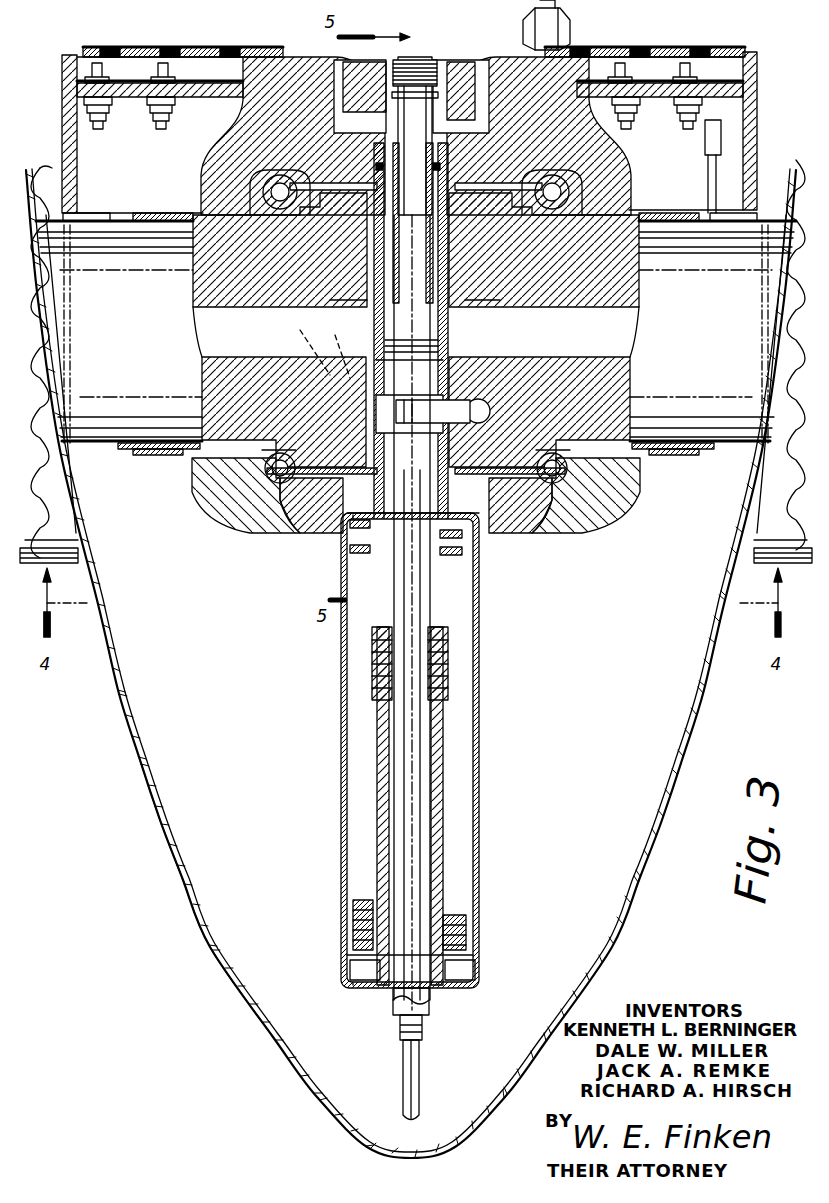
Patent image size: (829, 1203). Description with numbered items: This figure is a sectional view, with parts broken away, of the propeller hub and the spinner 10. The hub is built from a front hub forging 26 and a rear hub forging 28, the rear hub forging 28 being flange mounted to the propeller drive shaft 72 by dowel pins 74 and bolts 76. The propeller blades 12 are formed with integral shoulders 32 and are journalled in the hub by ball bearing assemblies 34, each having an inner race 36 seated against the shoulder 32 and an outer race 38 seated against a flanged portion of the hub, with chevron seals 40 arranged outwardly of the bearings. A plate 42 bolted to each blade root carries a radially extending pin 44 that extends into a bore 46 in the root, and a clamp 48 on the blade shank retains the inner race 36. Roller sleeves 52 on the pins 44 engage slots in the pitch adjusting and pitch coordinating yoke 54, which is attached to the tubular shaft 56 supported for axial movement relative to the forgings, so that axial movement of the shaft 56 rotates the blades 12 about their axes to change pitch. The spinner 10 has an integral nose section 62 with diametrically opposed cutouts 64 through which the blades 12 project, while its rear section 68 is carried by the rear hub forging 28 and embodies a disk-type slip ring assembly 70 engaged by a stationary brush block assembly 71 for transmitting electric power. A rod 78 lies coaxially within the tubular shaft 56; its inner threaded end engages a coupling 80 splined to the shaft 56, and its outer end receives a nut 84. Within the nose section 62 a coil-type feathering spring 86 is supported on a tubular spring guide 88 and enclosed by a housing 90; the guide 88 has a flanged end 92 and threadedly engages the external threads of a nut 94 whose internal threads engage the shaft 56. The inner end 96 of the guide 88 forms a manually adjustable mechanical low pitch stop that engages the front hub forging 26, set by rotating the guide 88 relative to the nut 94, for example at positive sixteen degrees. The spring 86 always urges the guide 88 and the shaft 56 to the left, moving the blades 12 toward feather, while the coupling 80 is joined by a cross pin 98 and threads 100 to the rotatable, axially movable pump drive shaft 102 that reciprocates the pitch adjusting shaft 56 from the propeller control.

The spinner 10 is at (320, 1098).
The propeller blades 12 is at (40, 175).
The front hub forging 26 is at (218, 500).
The rear hub forging 28 is at (205, 185).
The integral shoulders 32 is at (466, 240).
The ball bearing assemblies 34 is at (282, 500).
The inner race 36 is at (300, 380).
The outer race 38 is at (262, 482).
The chevron seals 40 is at (264, 210).
The plate 42 is at (355, 258).
The pin 44 is at (486, 386).
The bore 46 is at (508, 390).
The clamp 48 is at (150, 456).
The roller sleeves 52 is at (409, 386).
The pitch adjusting and pitch coordinating yoke 54 is at (388, 441).
The tubular shaft 56 is at (470, 560).
The nose section 62 is at (212, 950).
The cutouts 64 is at (82, 447).
The rear section 68 is at (62, 90).
The slip ring assembly 70 is at (740, 50).
The brush block assembly 71 is at (98, 128).
The propeller drive shaft 72 is at (310, 50).
The dowel pins 74 is at (262, 48).
The bolts 76 is at (572, 22).
The rod 78 is at (394, 574).
The coupling 80 is at (420, 60).
The nut 84 is at (395, 998).
The feathering spring 86 is at (470, 935).
The spring guide 88 is at (445, 820).
The housing 90 is at (478, 770).
The flanged end 92 is at (458, 968).
The nut 94 is at (445, 672).
The inner end 96 is at (375, 640).
The cross pin 98 is at (380, 88).
The threads 100 is at (436, 100).
The pump drive shaft 102 is at (448, 56).